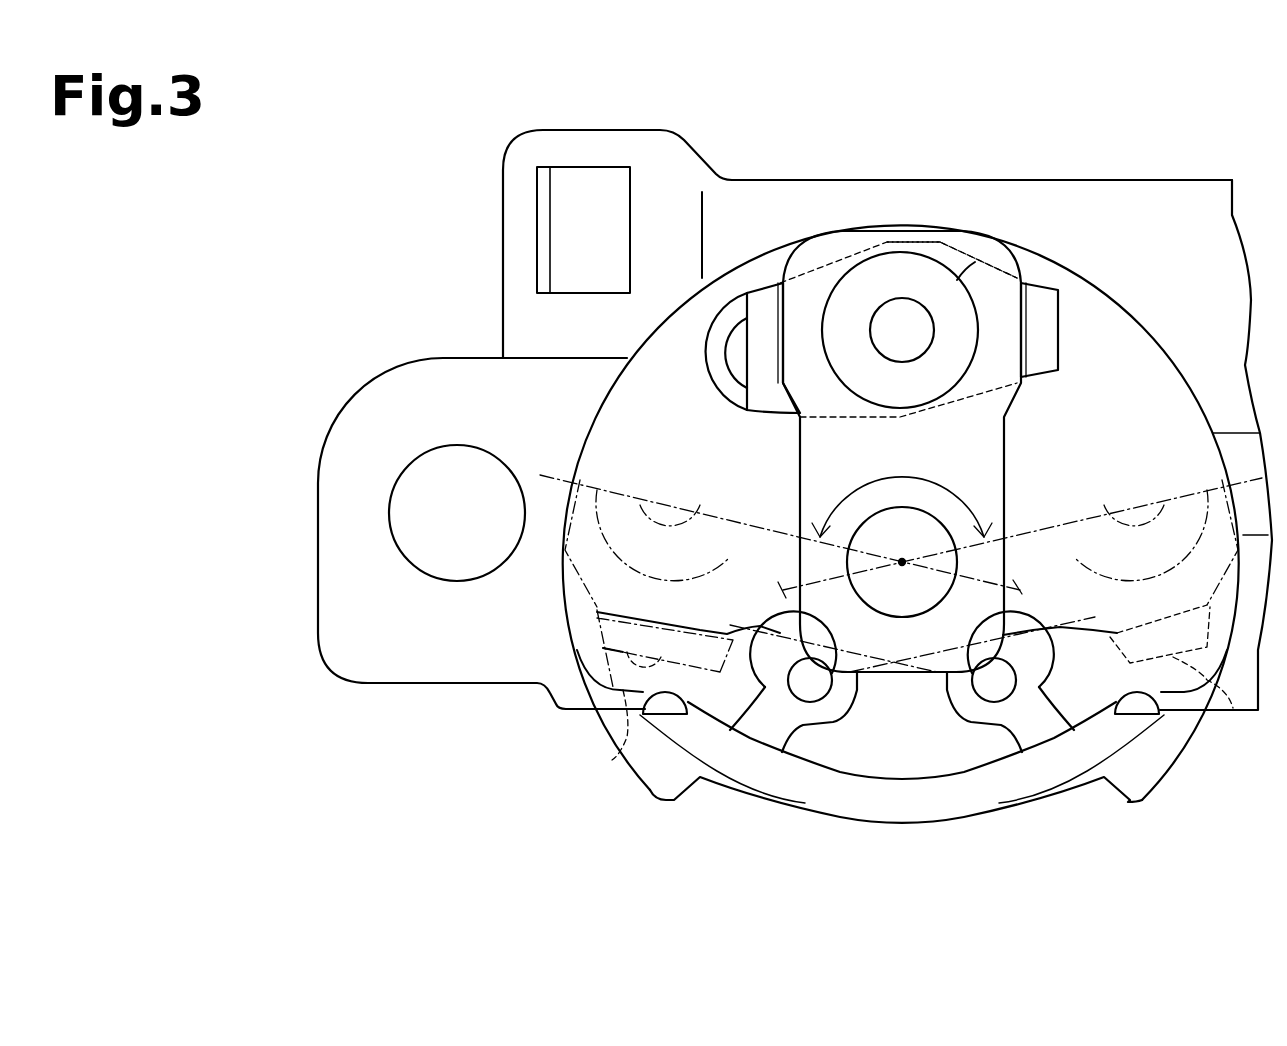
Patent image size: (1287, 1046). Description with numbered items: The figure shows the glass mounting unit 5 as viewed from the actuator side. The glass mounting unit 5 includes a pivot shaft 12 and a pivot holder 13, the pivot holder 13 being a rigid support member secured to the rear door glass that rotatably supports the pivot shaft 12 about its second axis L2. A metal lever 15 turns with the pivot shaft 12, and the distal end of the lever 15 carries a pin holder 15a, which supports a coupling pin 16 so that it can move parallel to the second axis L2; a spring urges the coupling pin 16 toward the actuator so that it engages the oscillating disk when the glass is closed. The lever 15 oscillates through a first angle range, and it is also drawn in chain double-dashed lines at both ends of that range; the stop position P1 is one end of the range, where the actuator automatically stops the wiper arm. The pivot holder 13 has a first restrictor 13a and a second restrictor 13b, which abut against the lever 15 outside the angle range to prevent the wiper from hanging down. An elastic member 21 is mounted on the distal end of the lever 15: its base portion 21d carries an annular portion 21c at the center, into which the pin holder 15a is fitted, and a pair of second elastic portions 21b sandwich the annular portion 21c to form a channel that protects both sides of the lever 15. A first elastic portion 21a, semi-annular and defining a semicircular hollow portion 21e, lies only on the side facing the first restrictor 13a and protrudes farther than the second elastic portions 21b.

The glass mounting unit 5 is at (1100, 172).
The pivot shaft 12 is at (857, 598).
The pivot holder 13 is at (513, 705).
The first restrictor 13a is at (703, 690).
The second restrictor 13b is at (1127, 686).
The lever 15 is at (1008, 438).
The pin holder 15a is at (967, 270).
The coupling pin 16 is at (905, 310).
The elastic member 21 is at (827, 257).
The first elastic portion 21a is at (706, 357).
The second elastic portions 21b is at (767, 297).
The annular portion 21c is at (890, 240).
The base portion 21d is at (948, 253).
The semicircular hollow portion 21e is at (740, 357).
The stop position P1 is at (553, 472).
The second axis L2 is at (902, 567).